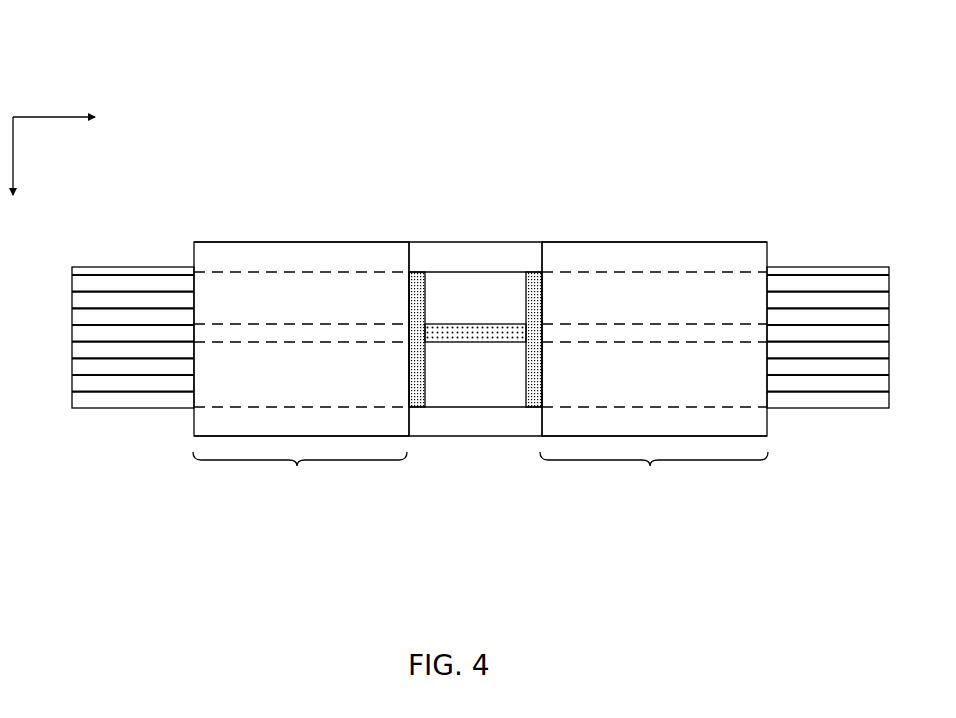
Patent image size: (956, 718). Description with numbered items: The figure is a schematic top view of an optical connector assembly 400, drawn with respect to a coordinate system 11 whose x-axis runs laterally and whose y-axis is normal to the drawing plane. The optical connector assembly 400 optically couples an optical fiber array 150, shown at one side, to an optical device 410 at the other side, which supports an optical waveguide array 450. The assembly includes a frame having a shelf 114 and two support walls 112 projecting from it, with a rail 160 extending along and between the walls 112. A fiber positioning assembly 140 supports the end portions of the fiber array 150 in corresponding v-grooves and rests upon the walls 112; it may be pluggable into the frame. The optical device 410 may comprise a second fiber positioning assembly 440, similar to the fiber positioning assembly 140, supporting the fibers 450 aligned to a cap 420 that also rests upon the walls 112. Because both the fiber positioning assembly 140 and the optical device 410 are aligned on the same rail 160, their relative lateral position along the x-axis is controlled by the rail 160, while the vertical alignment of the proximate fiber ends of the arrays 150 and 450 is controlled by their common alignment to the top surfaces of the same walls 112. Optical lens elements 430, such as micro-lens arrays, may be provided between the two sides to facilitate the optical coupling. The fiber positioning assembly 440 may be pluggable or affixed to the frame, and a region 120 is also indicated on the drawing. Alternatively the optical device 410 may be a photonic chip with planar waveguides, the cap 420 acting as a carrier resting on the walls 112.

The coordinate system 11 is at (27, 94).
The optical connector assembly 400 is at (472, 71).
The optical device 410 is at (605, 184).
The support walls 112 is at (448, 242).
The shelf 114 is at (505, 394).
The first waveguide section 120 is at (298, 242).
The fiber positioning assembly 140 is at (300, 476).
The optical fiber array 150 is at (130, 266).
The rail 160 is at (490, 324).
The cap 420 is at (660, 242).
The optical lens elements 430 is at (420, 436).
The fiber positioning assembly 440 is at (654, 475).
The optical waveguide array 450 is at (842, 266).